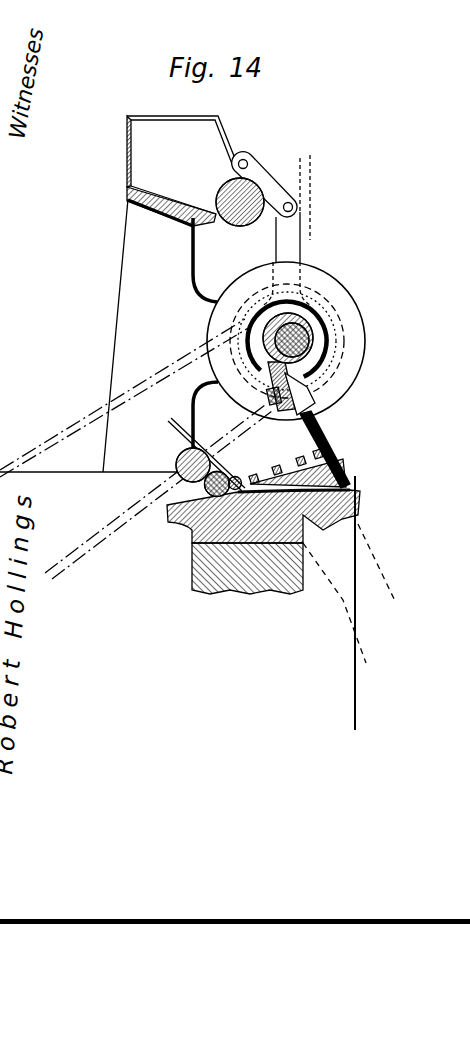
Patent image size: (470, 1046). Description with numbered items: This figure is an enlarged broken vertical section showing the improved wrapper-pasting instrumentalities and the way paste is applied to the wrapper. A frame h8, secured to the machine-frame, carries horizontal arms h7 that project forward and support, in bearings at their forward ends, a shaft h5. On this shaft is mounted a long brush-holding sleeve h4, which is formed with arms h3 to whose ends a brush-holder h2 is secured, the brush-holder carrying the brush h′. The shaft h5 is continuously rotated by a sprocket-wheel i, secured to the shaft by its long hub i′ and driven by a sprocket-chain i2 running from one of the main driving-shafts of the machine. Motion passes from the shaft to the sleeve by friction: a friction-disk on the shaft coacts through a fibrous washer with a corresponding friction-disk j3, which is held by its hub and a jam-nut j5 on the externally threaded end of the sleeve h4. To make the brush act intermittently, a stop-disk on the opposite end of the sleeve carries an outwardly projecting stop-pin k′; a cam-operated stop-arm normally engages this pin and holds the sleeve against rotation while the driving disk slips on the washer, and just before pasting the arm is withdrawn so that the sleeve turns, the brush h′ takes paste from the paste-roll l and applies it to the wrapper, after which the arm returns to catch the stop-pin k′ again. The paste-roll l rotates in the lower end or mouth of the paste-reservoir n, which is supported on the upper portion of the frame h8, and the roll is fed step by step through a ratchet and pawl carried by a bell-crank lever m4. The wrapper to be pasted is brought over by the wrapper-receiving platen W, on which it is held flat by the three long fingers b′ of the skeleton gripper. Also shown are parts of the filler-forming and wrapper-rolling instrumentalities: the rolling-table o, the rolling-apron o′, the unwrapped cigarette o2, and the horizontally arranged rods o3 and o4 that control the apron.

The paste-reservoir n is at (182, 171).
The bell-crank lever m4 is at (301, 196).
The paste-roll l is at (275, 207).
The long hub i′ is at (233, 227).
The frame h8 is at (148, 335).
The horizontal arms h7 is at (207, 333).
The friction-disk j3 is at (336, 273).
The jam-nut j5 is at (320, 309).
The shaft h5 is at (305, 329).
The long sleeve h4 is at (313, 346).
The sprocket-wheel i is at (342, 353).
The brush-holder h2 is at (313, 398).
The brush h′ is at (325, 430).
The arms h3 is at (270, 397).
The horizontally-arranged rod o4 is at (201, 449).
The horizontally-arranged rod o3 is at (239, 477).
The rolling-apron o′ is at (205, 489).
The unwrapped cigarette o2 is at (170, 504).
The rolling-table o is at (190, 538).
The fingers b′ is at (279, 457).
The wrapper-receiving platen W is at (334, 464).
The stop-pin k′ is at (125, 407).
The sprocket-chain i2 is at (158, 492).